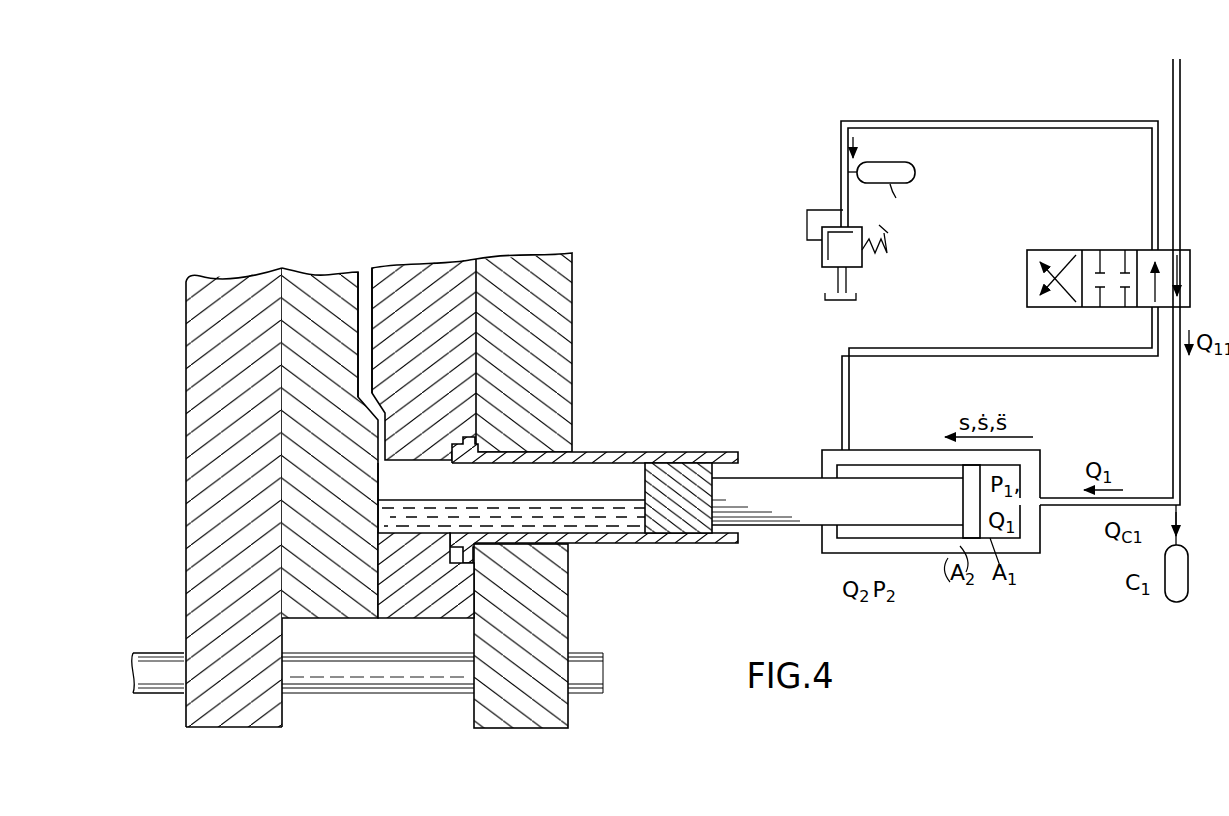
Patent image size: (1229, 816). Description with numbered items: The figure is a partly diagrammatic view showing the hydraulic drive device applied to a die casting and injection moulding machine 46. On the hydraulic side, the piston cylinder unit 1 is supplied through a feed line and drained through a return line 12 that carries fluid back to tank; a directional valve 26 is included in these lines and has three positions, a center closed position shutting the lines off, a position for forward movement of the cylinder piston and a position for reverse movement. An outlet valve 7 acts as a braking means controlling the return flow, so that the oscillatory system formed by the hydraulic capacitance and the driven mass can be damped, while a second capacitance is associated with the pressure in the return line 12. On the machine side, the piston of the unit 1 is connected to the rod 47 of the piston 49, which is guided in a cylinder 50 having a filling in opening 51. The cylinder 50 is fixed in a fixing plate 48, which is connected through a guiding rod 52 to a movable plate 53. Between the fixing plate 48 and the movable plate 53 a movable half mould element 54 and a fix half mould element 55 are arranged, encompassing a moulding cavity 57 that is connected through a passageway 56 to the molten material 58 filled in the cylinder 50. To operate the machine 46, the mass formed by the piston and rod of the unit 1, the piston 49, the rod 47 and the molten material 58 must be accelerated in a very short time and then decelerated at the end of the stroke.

The piston cylinder unit 1 is at (885, 448).
The outlet valve 7 is at (877, 258).
The return line 12 is at (840, 143).
The directional valve 26 is at (1102, 242).
The die casting and injection moulding machine 46 is at (661, 418).
The rod 47 is at (778, 493).
The fixing plate 48 is at (556, 312).
The piston 49 is at (690, 518).
The cylinder 50 is at (610, 544).
The filling in opening 51 is at (616, 456).
The guiding rod 52 is at (364, 678).
The movable plate 53 is at (242, 708).
The movable half mould element 54 is at (325, 602).
The fix half mould element 55 is at (402, 600).
The passageway 56 is at (442, 486).
The moulding cavity 57 is at (363, 297).
The molten material 58 is at (605, 512).